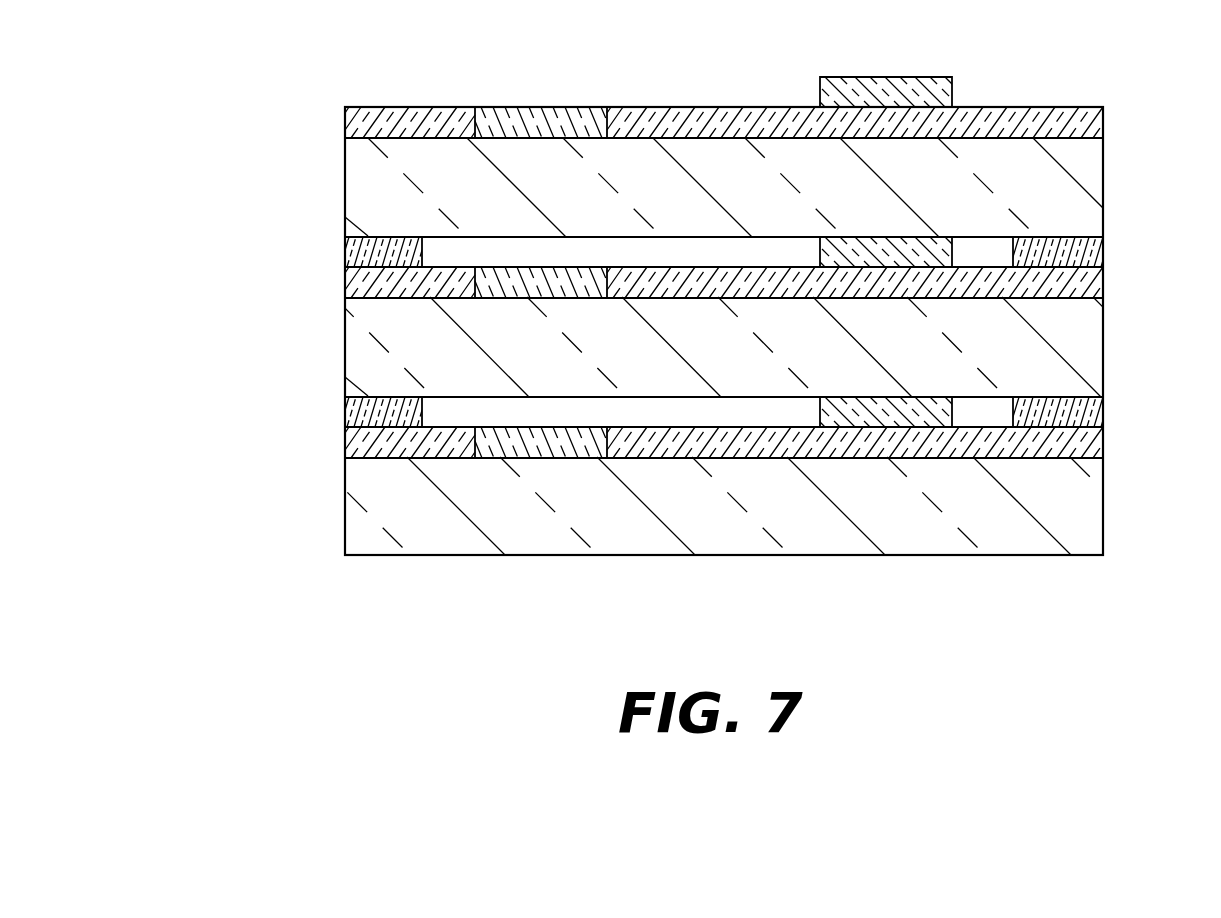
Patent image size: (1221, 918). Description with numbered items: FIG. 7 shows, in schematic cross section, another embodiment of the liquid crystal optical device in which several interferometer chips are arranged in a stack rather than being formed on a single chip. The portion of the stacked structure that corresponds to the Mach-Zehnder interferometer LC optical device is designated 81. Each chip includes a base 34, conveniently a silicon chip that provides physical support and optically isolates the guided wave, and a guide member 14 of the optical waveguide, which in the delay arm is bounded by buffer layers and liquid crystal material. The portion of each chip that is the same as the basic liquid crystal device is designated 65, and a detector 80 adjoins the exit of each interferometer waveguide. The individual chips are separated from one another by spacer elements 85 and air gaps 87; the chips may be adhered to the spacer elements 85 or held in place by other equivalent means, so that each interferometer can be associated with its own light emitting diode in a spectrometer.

The guide member 14 is at (406, 107).
The base 34 is at (345, 185).
The LC optical device portion 65 is at (880, 77).
The detector 80 is at (550, 107).
The LC optical device portion 81 is at (212, 345).
The spacer element 85 is at (345, 250).
The air gap 87 is at (690, 237).